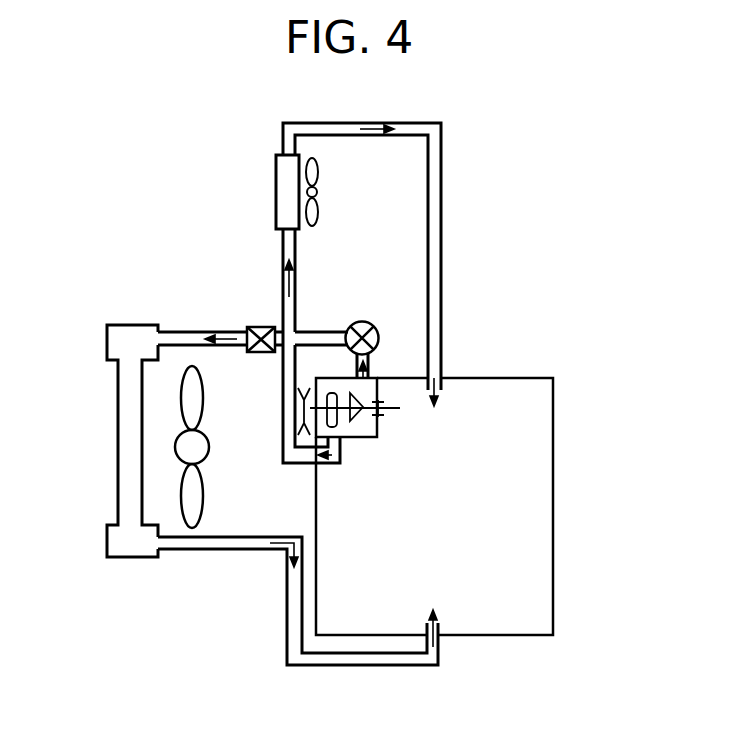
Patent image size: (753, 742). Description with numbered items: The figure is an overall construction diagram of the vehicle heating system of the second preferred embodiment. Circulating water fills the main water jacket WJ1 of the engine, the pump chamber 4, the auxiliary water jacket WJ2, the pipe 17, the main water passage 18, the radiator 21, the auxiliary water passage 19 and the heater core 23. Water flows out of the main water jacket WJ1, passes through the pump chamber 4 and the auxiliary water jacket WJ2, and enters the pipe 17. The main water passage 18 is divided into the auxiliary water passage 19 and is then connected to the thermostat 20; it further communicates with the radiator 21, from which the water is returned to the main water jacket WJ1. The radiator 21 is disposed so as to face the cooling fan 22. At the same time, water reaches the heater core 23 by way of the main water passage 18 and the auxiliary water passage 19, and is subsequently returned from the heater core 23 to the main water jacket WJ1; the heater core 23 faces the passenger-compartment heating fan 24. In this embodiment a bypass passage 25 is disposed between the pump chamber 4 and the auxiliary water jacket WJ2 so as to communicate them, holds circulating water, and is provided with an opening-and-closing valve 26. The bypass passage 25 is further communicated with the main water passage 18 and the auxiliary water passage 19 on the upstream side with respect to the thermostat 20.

The pump chamber 4 is at (372, 428).
The pipe 17 is at (332, 463).
The main water passage 18 is at (283, 412).
The auxiliary water passage 19 is at (283, 282).
The thermostat 20 is at (262, 352).
The radiator 21 is at (128, 452).
The cooling fan 22 is at (200, 452).
The heater core 23 is at (275, 189).
The passenger-compartment heating fan 24 is at (317, 192).
The bypass passage 25 is at (369, 367).
The opening-and-closing valve 26 is at (379, 329).
The main water jacket WJ1 is at (434, 506).
The auxiliary water jacket WJ2 is at (345, 437).